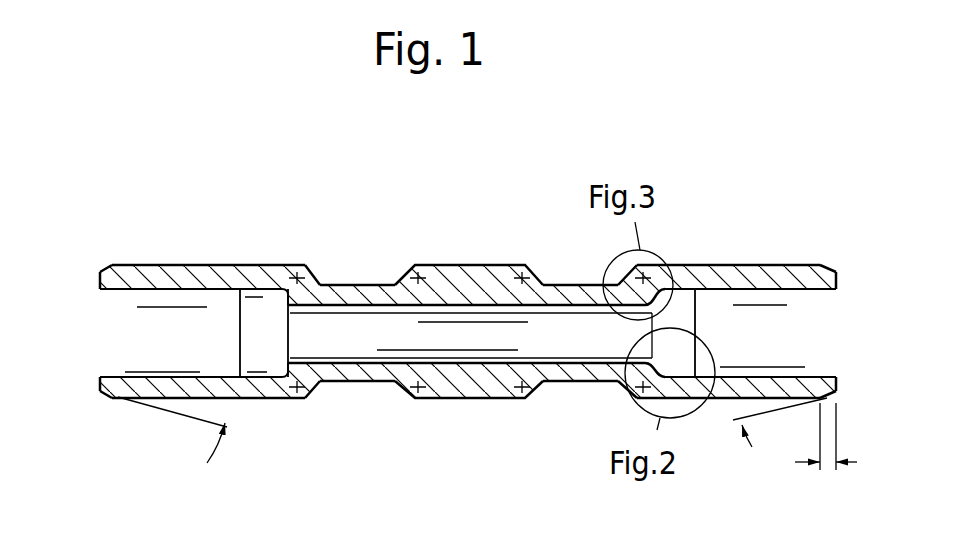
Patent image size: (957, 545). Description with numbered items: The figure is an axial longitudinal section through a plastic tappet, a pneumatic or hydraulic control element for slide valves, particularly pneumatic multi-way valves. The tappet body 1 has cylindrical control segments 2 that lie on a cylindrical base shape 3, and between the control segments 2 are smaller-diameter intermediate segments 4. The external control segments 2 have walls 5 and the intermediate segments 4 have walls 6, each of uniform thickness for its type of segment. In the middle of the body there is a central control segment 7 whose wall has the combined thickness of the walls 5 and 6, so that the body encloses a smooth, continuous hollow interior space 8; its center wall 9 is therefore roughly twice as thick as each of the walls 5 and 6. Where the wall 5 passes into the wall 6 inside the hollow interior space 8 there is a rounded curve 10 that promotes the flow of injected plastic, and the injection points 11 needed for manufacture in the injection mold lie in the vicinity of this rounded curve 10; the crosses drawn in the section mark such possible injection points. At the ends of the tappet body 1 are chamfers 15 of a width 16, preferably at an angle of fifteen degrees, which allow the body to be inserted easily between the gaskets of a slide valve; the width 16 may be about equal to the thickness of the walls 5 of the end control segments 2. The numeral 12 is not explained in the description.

The tappet body 1 is at (173, 205).
The control segment 2 is at (190, 265).
The cylindrical base shape 3 is at (348, 400).
The intermediate segment 4 is at (365, 295).
The wall 5 is at (253, 267).
The wall 6 is at (382, 370).
The central control segment 7 is at (470, 268).
The hollow interior space 8 is at (425, 345).
The center wall 9 is at (476, 380).
The rounded curve 10 is at (277, 375).
The injection points 11 is at (288, 365).
The shoulder 12 is at (308, 398).
The chamfer 15 is at (468, 381).
The width 16 is at (826, 455).